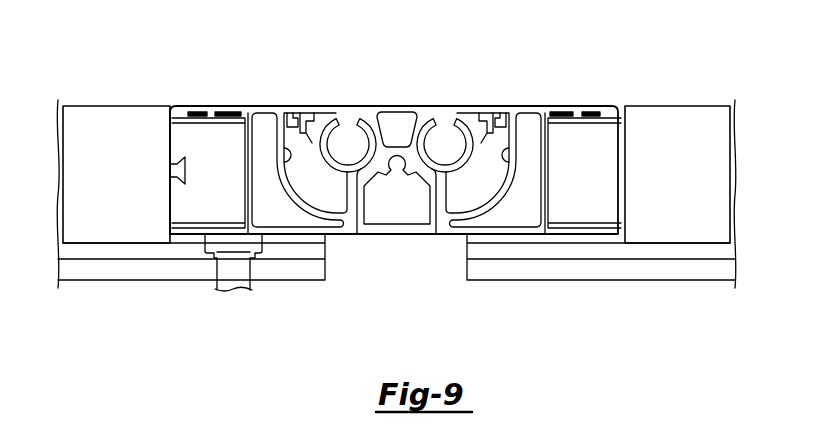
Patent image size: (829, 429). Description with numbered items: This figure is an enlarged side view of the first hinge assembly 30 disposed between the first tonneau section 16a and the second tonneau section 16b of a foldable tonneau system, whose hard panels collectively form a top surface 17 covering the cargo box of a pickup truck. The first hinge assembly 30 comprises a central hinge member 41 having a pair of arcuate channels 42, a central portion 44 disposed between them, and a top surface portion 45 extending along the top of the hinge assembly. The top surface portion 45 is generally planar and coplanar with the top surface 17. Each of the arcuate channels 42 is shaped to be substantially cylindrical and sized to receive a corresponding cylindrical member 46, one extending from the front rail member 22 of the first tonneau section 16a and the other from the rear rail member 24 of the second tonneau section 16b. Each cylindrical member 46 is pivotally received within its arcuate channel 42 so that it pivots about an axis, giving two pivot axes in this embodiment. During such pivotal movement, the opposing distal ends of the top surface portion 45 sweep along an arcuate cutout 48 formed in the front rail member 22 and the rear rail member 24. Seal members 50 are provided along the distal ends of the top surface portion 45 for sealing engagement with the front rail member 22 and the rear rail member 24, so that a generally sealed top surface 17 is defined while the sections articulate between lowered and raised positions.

The top surface 17 is at (80, 106).
The second tonneau section 16b is at (133, 106).
The first tonneau section 16a is at (690, 106).
The first hinge assembly 30 is at (532, 70).
The rear rail member 24 is at (232, 106).
The front rail member 22 is at (595, 106).
The arcuate channels 42 is at (352, 117).
The top surface portion 45 is at (410, 106).
The central hinge member 41 is at (366, 240).
The central portion 44 is at (406, 235).
The cylindrical member 46 is at (330, 168).
The arcuate cutout 48 is at (283, 154).
The seal members 50 is at (300, 108).